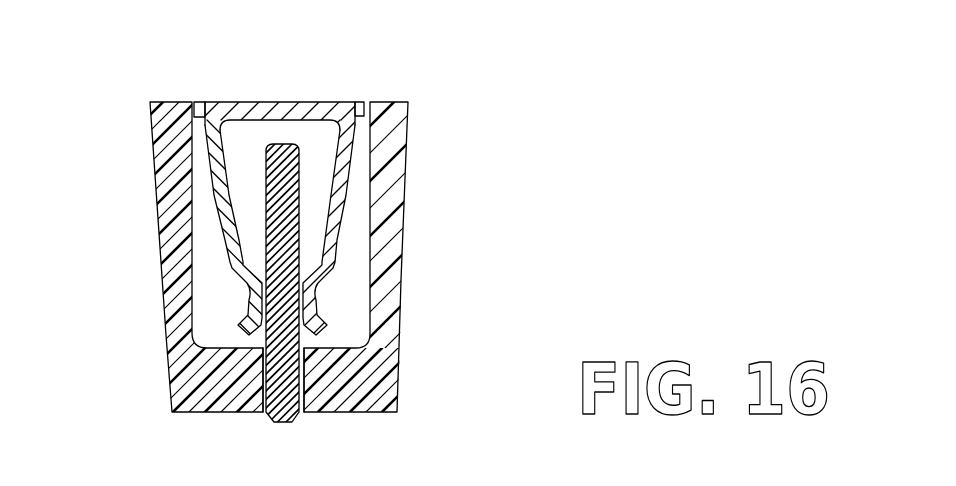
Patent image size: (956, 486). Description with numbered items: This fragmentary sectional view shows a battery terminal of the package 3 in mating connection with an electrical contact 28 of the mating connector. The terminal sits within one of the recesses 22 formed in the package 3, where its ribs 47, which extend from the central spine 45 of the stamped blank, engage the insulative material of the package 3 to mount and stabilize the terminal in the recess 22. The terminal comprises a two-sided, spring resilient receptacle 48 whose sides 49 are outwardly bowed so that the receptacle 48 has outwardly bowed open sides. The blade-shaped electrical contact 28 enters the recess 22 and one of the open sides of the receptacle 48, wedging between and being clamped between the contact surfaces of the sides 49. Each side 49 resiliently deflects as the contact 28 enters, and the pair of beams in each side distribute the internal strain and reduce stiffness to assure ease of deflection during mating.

The package 3 is at (142, 149).
The recess 22 is at (306, 413).
The electrical contact 28 is at (256, 425).
The central spine 45 is at (295, 90).
The rib 47 is at (200, 106).
The receptacle 48 is at (352, 253).
The side of receptacle 49 is at (218, 225).